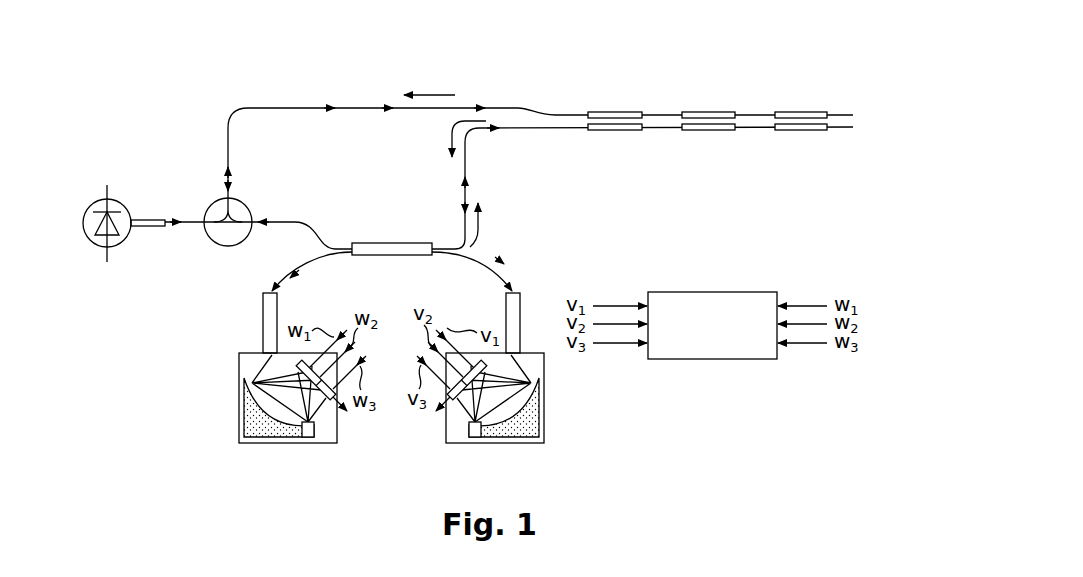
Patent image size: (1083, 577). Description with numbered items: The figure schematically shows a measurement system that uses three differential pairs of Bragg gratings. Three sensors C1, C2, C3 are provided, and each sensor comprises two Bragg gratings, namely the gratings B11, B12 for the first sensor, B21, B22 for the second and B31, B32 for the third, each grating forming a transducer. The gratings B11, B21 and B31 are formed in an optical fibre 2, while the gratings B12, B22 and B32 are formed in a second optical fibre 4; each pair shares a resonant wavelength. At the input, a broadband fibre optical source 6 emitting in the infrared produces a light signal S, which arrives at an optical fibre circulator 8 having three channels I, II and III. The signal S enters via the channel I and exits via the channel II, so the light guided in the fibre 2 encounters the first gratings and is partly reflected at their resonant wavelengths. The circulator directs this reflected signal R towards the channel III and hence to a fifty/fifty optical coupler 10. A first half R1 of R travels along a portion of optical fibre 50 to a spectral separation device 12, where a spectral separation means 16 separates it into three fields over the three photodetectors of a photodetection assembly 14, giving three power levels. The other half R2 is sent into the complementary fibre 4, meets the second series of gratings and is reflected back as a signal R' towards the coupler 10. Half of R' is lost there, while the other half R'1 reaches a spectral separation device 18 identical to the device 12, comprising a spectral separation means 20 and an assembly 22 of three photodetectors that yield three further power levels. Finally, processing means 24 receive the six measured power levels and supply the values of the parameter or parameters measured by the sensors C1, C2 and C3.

The optical fibre 2 is at (532, 108).
The optical fibre 4 is at (533, 135).
The broadband fibre optical source 6 is at (93, 200).
The optical fibre circulator 8 is at (245, 204).
The optical coupler 10 is at (393, 243).
The spectral separation device 12 is at (544, 400).
The photodetection assembly 14 is at (437, 413).
The spectral separation means 16 is at (511, 440).
The spectral separation device 18 is at (239, 400).
The spectral separation means 20 is at (272, 437).
The assembly of three photodetectors 22 is at (345, 413).
The processing means 24 is at (725, 360).
The optical fibre 50 is at (478, 265).
The light signal S is at (176, 219).
The channel I of the circulator I is at (206, 232).
The channel II of the circulator II is at (222, 200).
The channel III of the circulator III is at (247, 241).
The reflected signal R is at (429, 73).
The reflected signal R' is at (441, 139).
The first half of the reflected signal R1 is at (493, 257).
The second half of the reflected signal R2 is at (481, 233).
The half of the return signal R'1 is at (319, 274).
The Bragg grating B11 is at (615, 112).
The Bragg grating B12 is at (612, 130).
The Bragg grating B21 is at (710, 112).
The Bragg grating B22 is at (708, 130).
The Bragg grating B31 is at (803, 112).
The Bragg grating B32 is at (800, 130).
The sensor C1 is at (634, 94).
The sensor C2 is at (733, 94).
The sensor C3 is at (822, 94).